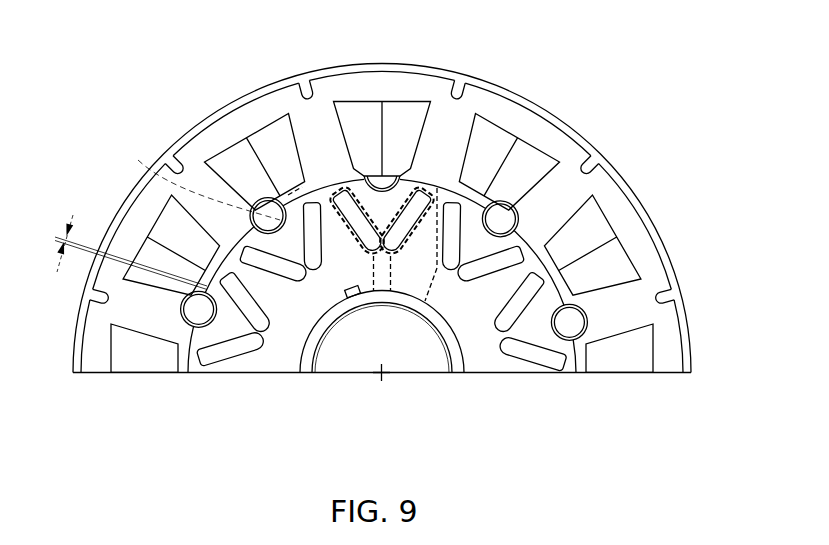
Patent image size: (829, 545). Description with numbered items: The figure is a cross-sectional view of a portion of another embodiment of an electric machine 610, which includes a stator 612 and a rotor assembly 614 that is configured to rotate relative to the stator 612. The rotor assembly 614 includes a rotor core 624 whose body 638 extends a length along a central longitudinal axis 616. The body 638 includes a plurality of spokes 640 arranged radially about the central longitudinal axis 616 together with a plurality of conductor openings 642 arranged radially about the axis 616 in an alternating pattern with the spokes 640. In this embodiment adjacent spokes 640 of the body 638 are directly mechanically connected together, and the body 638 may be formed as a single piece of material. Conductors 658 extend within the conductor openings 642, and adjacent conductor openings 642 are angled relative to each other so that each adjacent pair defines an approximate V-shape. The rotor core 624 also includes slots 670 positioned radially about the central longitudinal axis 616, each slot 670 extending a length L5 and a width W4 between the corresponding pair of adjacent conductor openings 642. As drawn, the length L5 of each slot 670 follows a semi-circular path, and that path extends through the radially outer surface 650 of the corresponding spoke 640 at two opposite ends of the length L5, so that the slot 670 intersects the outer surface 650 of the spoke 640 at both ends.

The electric machine 610 is at (660, 65).
The stator 612 is at (567, 125).
The rotor assembly 614 is at (495, 384).
The central longitudinal axis 616 is at (380, 380).
The rotor core 624 is at (238, 384).
The body 638 is at (278, 355).
The spokes 640 is at (350, 192).
The conductor openings 642 is at (432, 230).
The radially outer surface 650 is at (315, 204).
The conductors 658 is at (478, 247).
The slots 670 is at (182, 312).
The length L5 is at (196, 178).
The width W4 is at (67, 227).